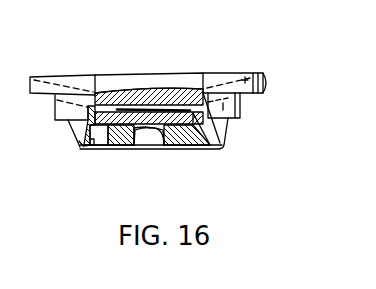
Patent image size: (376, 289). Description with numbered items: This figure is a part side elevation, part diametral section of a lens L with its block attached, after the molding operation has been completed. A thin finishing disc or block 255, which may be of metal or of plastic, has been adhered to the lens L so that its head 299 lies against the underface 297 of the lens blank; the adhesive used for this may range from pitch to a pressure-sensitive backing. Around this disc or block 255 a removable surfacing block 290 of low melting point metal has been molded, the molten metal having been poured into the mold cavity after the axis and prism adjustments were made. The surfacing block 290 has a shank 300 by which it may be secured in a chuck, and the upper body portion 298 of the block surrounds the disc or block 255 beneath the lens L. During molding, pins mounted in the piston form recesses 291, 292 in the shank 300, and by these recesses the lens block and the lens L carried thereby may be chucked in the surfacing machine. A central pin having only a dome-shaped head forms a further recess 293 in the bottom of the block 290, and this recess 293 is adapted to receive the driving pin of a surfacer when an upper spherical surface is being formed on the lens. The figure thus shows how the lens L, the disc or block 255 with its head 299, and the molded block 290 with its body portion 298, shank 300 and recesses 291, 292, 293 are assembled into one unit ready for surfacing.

The finishing disc or block 255 is at (127, 112).
The low melting point block 290 is at (235, 134).
The recess 291 is at (96, 136).
The recess 292 is at (207, 130).
The recess 293 is at (154, 138).
The underface of the lens blank 297 is at (48, 97).
The upper body 298 is at (177, 87).
The head 299 is at (65, 115).
The shank 300 is at (80, 140).
The lens L is at (268, 83).